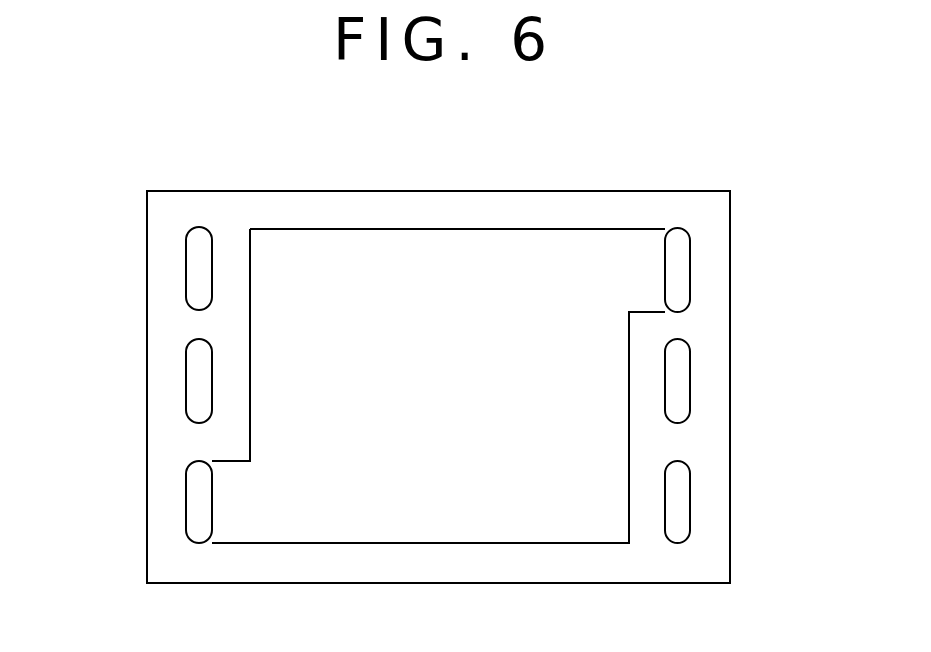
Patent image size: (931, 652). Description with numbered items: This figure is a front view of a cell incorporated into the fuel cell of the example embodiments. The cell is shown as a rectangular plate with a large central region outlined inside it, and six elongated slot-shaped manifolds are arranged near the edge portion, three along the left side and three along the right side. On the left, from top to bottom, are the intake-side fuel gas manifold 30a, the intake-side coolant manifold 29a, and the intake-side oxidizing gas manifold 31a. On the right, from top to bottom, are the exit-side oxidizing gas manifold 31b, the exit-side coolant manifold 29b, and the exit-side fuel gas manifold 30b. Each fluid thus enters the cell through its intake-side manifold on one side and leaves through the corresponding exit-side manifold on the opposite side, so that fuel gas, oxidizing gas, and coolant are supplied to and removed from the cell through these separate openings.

The intake-side coolant manifold 29a is at (198, 383).
The exit-side coolant manifold 29b is at (680, 380).
The intake-side fuel gas manifold 30a is at (198, 263).
The exit-side fuel gas manifold 30b is at (683, 495).
The intake-side oxidizing gas manifold 31a is at (200, 503).
The exit-side oxidizing gas manifold 31b is at (680, 268).